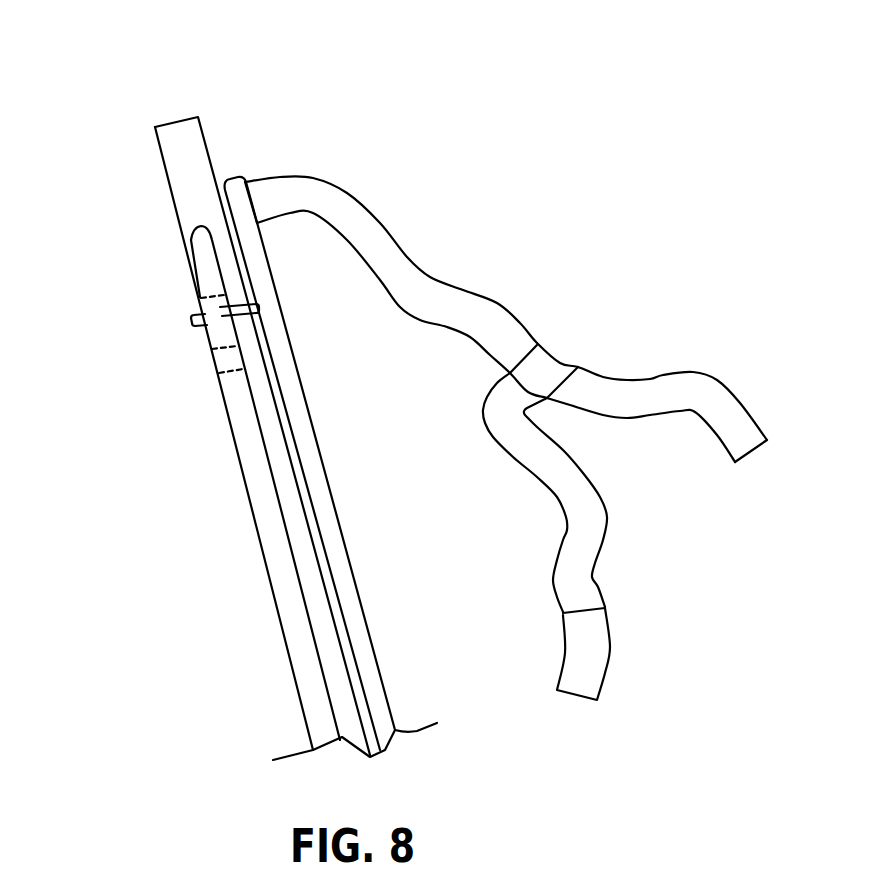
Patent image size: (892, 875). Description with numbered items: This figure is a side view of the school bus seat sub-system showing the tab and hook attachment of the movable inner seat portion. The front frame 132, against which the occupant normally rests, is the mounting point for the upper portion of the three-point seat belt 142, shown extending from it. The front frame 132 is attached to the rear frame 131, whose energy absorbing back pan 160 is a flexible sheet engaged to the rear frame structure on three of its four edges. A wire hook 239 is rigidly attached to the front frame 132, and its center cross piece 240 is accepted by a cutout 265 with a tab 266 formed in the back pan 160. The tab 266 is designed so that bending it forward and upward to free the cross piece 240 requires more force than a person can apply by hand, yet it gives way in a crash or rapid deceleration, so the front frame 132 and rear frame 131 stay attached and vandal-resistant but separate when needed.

The rear frame 131 is at (200, 115).
The front frame 132 is at (239, 176).
The three-point seat belt 142 is at (416, 266).
The back pan 160 is at (254, 511).
The wire hook 239 is at (242, 320).
The center cross piece 240 is at (188, 322).
The cutout 265 is at (219, 373).
The tab 266 is at (206, 340).